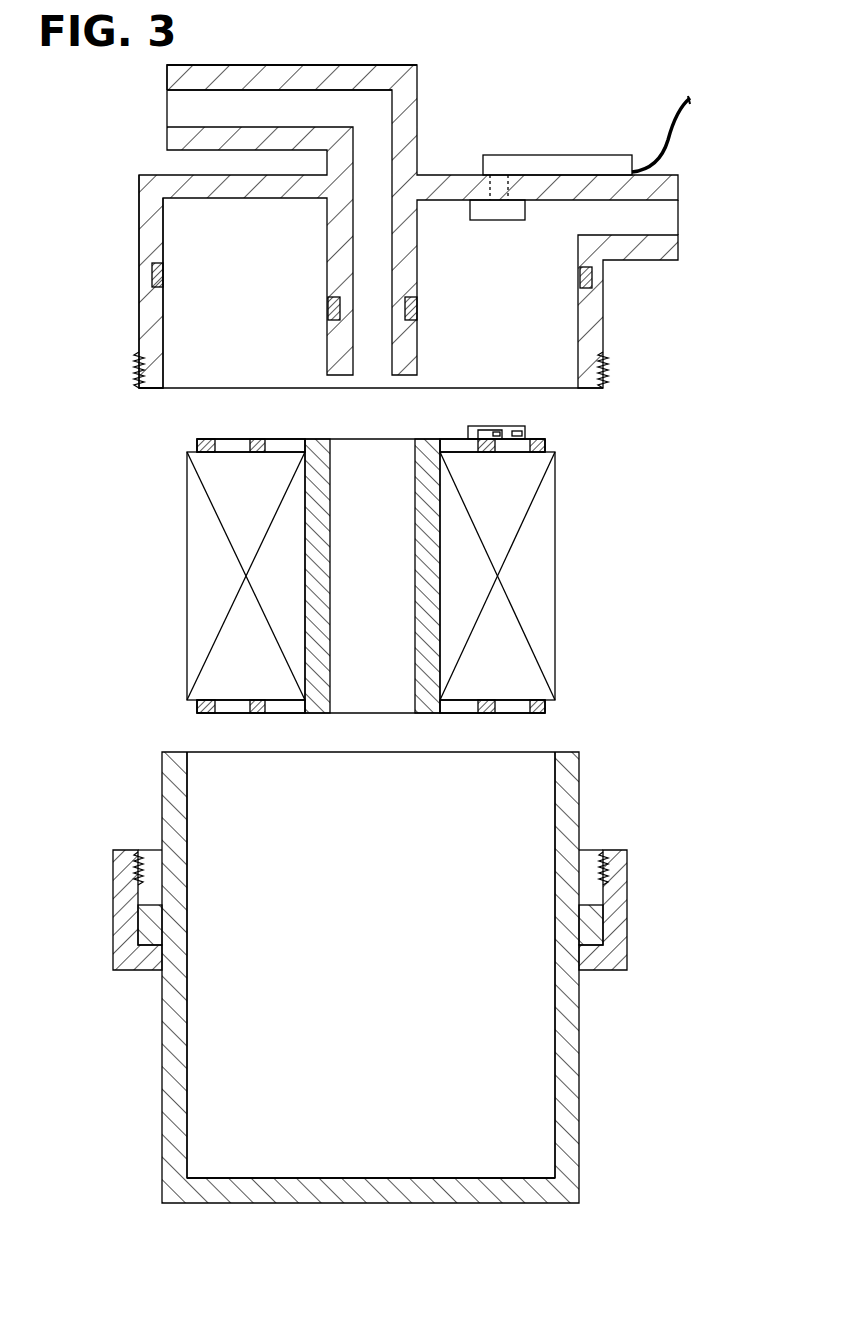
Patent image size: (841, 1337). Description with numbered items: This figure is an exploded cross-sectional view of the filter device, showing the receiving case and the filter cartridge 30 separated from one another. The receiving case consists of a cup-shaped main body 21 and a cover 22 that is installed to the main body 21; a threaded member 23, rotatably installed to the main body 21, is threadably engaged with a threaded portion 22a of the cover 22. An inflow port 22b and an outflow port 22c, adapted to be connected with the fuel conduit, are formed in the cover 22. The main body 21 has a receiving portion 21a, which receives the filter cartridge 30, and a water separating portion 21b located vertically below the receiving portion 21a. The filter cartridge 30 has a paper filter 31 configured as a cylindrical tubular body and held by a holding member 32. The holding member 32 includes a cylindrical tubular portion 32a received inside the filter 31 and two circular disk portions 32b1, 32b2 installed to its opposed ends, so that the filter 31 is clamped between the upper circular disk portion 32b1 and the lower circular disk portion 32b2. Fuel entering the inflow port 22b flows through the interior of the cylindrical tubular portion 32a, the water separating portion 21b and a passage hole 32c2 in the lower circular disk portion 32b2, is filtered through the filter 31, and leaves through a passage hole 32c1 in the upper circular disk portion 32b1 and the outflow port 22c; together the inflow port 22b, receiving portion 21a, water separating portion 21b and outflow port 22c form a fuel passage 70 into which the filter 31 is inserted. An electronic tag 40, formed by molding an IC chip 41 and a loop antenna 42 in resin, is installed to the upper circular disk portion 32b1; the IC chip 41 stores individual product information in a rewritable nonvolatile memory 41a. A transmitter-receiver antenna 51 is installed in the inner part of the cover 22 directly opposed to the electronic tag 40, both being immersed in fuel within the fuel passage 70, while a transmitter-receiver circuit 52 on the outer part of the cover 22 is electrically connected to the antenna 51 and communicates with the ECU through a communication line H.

The main body 21 is at (162, 1102).
The receiving portion 21a is at (416, 955).
The water separating portion 21b is at (416, 1138).
The cover 22 is at (150, 205).
The threaded portion 22a is at (139, 365).
The inflow port 22b is at (172, 72).
The outflow port 22c is at (664, 260).
The threaded member 23 is at (113, 883).
The filter cartridge 30 is at (186, 578).
The filter 31 is at (545, 583).
The holding member 32 is at (371, 576).
The cylindrical tubular portion 32a is at (440, 617).
The upper circular disk portion 32b1 is at (200, 442).
The lower circular disk portion 32b2 is at (545, 706).
The passage hole 32c1 is at (229, 440).
The passage hole 32c2 is at (520, 714).
The electronic tag 40 is at (527, 431).
The IC chip 41 is at (479, 428).
The memory 41a is at (496, 428).
The loop antenna 42 is at (520, 428).
The transmitter-receiver antenna 51 is at (499, 220).
The transmitter-receiver circuit 52 is at (566, 154).
The fuel passage 70 is at (361, 621).
The communication line H is at (670, 140).